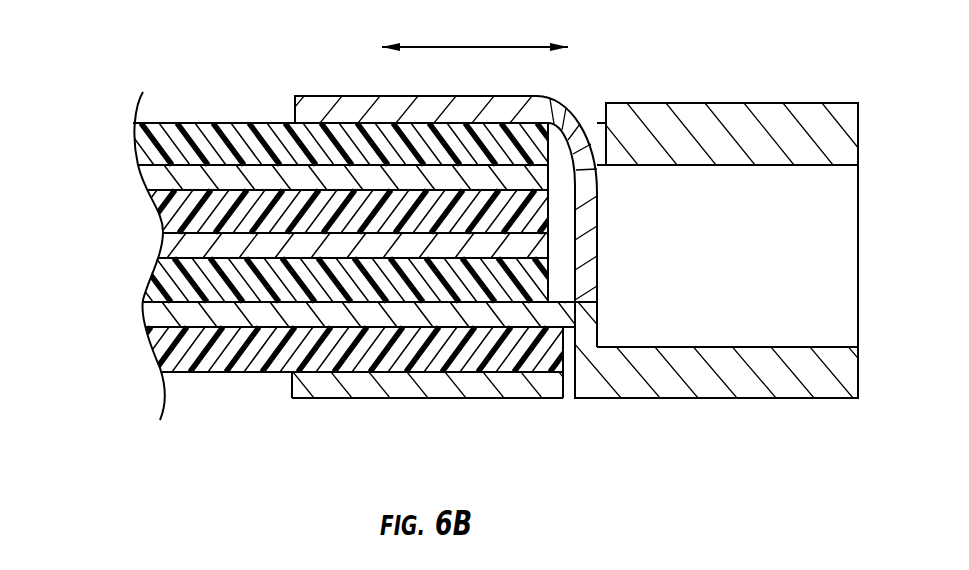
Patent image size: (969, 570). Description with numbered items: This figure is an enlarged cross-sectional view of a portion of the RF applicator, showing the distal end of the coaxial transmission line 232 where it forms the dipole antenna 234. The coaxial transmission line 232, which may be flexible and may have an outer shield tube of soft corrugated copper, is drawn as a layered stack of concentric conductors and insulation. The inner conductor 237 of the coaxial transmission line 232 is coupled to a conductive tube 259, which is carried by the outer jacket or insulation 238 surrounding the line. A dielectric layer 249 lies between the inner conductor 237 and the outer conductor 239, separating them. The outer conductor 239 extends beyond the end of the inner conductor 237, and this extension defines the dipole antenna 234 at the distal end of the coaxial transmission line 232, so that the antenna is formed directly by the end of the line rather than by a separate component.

The coaxial transmission line 232 is at (264, 92).
The dipole antenna 234 is at (694, 405).
The inner conductor 237 is at (542, 122).
The outer jacket or insulation 238 is at (193, 122).
The outer conductor 239 is at (143, 180).
The dielectric layer 249 is at (163, 263).
The conductive tube 259 is at (367, 97).